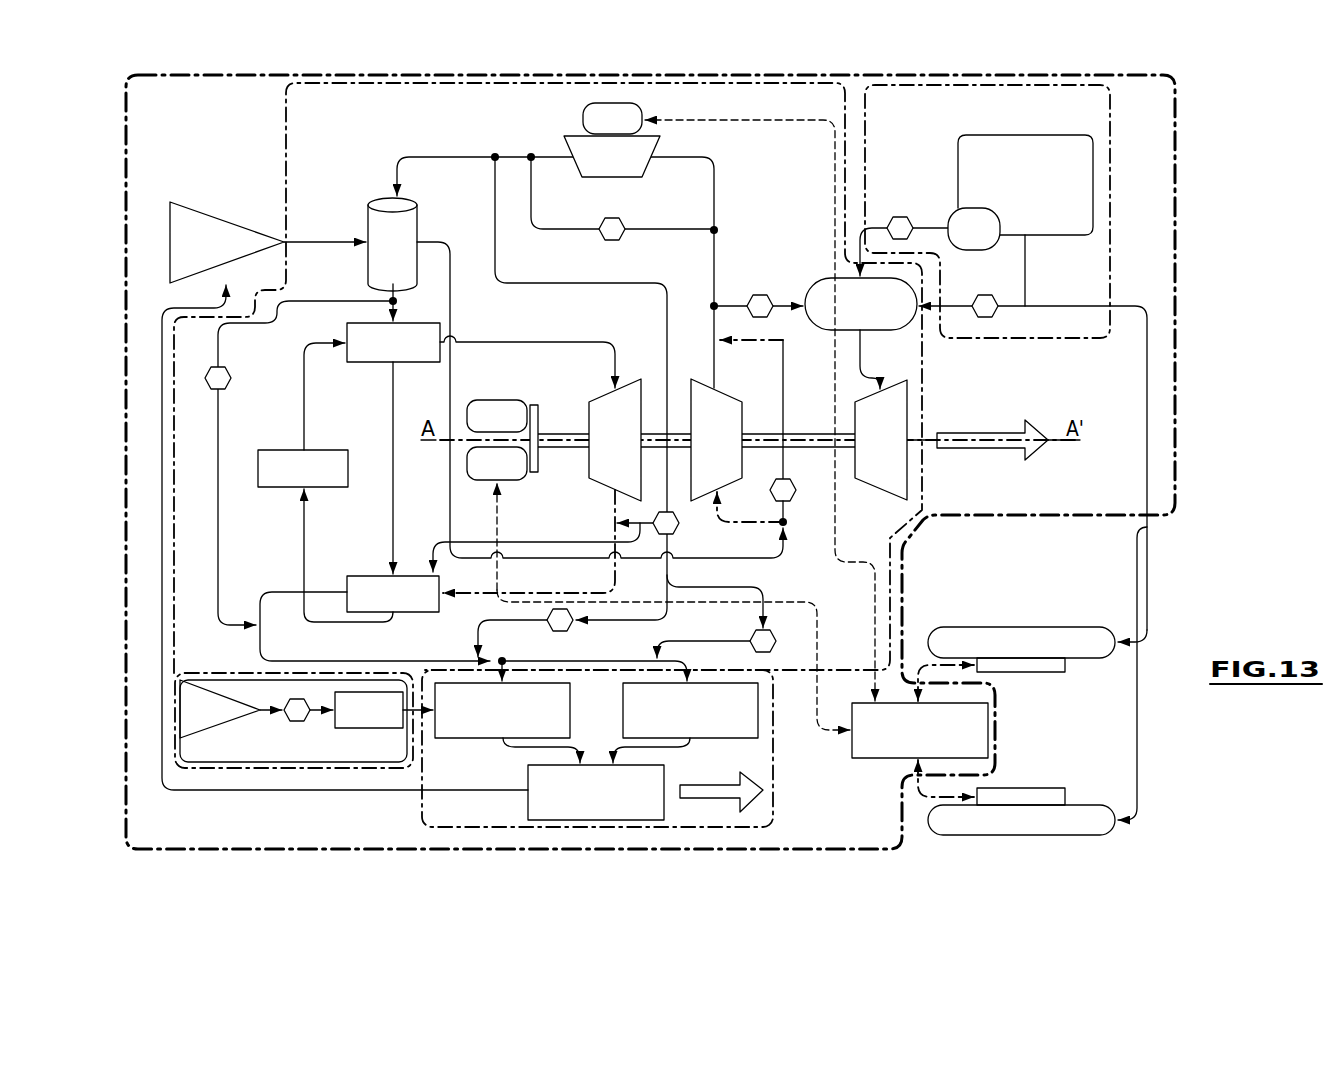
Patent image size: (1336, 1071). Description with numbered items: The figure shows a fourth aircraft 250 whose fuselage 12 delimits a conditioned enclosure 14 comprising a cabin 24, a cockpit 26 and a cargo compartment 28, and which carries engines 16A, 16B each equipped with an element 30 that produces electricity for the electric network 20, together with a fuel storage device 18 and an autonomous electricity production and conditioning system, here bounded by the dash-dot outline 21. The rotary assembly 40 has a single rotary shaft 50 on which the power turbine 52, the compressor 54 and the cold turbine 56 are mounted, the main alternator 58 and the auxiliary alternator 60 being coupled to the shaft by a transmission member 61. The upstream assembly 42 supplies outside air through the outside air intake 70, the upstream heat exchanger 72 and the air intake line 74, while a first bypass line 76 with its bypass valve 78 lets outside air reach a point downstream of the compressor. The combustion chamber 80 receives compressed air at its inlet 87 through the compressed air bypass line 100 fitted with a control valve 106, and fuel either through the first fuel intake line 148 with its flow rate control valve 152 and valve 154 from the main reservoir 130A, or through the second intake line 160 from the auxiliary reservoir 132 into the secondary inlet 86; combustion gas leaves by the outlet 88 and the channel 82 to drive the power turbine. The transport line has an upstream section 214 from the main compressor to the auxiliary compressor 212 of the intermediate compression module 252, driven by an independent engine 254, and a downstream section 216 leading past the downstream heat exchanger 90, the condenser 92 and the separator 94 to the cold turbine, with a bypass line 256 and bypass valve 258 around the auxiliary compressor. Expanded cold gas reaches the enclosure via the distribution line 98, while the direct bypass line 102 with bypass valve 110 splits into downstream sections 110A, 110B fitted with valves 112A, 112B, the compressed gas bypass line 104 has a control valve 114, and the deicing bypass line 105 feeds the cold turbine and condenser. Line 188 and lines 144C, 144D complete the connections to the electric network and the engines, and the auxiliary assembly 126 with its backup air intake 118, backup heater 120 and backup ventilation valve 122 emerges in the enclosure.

The fuselage 12 is at (910, 837).
The enclosure 14 is at (778, 771).
The engine 16A is at (1085, 648).
The engine 16B is at (1118, 837).
The fuel storage device 18 is at (1047, 80).
The electric network 20 is at (908, 741).
The power plant 21 is at (783, 77).
The cabin 24 is at (490, 721).
The cockpit 26 is at (678, 721).
The cargo compartment 28 is at (584, 803).
The element 30 is at (1045, 672).
The rotary assembly 40 is at (920, 414).
The upstream assembly 42 is at (265, 187).
The rotary shaft 50 is at (802, 436).
The power turbine 52 is at (869, 451).
The compressor 54 is at (705, 451).
The cold turbine 56 is at (603, 451).
The main alternator 58 is at (485, 474).
The auxiliary alternator 60 is at (485, 427).
The transmission member 61 is at (534, 405).
The outside air intake 70 is at (193, 253).
The upstream heat exchanger 72 is at (380, 254).
The outside upstream air intake line 74 is at (455, 327).
The first outside air bypass line 76 is at (783, 355).
The bypass valve 78 is at (792, 500).
The combustion chamber 80 is at (914, 290).
The channel 82 is at (858, 355).
The secondary inlet 86 is at (857, 280).
The compressed air intake inlet 87 is at (806, 300).
The combustion gas outlet 88 is at (862, 335).
The downstream heat exchanger 90 is at (381, 353).
The condenser 92 is at (381, 605).
The separator 94 is at (291, 479).
The expanded cold gas distribution line 98 is at (468, 598).
The compressed air bypass line 100 is at (783, 290).
The direct compressed air bypass line 102 is at (494, 202).
The bypass line 104 is at (337, 300).
The direct bypass line 105 is at (563, 540).
The control valve 106 is at (757, 292).
The bypass valve 110 is at (682, 527).
The downstream section 110A is at (672, 610).
The downstream section 110B is at (766, 590).
The valve 112A is at (578, 628).
The valve 112B is at (772, 652).
The control valve 114 is at (232, 385).
The backup air intake 118 is at (188, 721).
The backup heater 120 is at (351, 721).
The backup ventilation valve 122 is at (297, 722).
The auxiliary unit 126 is at (227, 772).
The main reservoir 130A is at (1000, 196).
The auxiliary reservoir 132 is at (956, 240).
The brake line 144C is at (1152, 562).
The brake line 144D is at (1139, 742).
The first fuel intake line 148 is at (1025, 308).
The flow rate control valve 152 is at (985, 320).
The valve 154 is at (900, 215).
The second intake line 160 is at (926, 226).
The conduit 188 is at (667, 595).
The auxiliary compressor 212 is at (594, 167).
The upstream section 214 is at (712, 272).
The downstream section 216 is at (546, 152).
The fourth aircraft 250 is at (1194, 806).
The intermediate compression module 252 is at (650, 110).
The engine 254 is at (594, 130).
The bypass line 256 is at (567, 228).
The bypass valve 258 is at (640, 222).